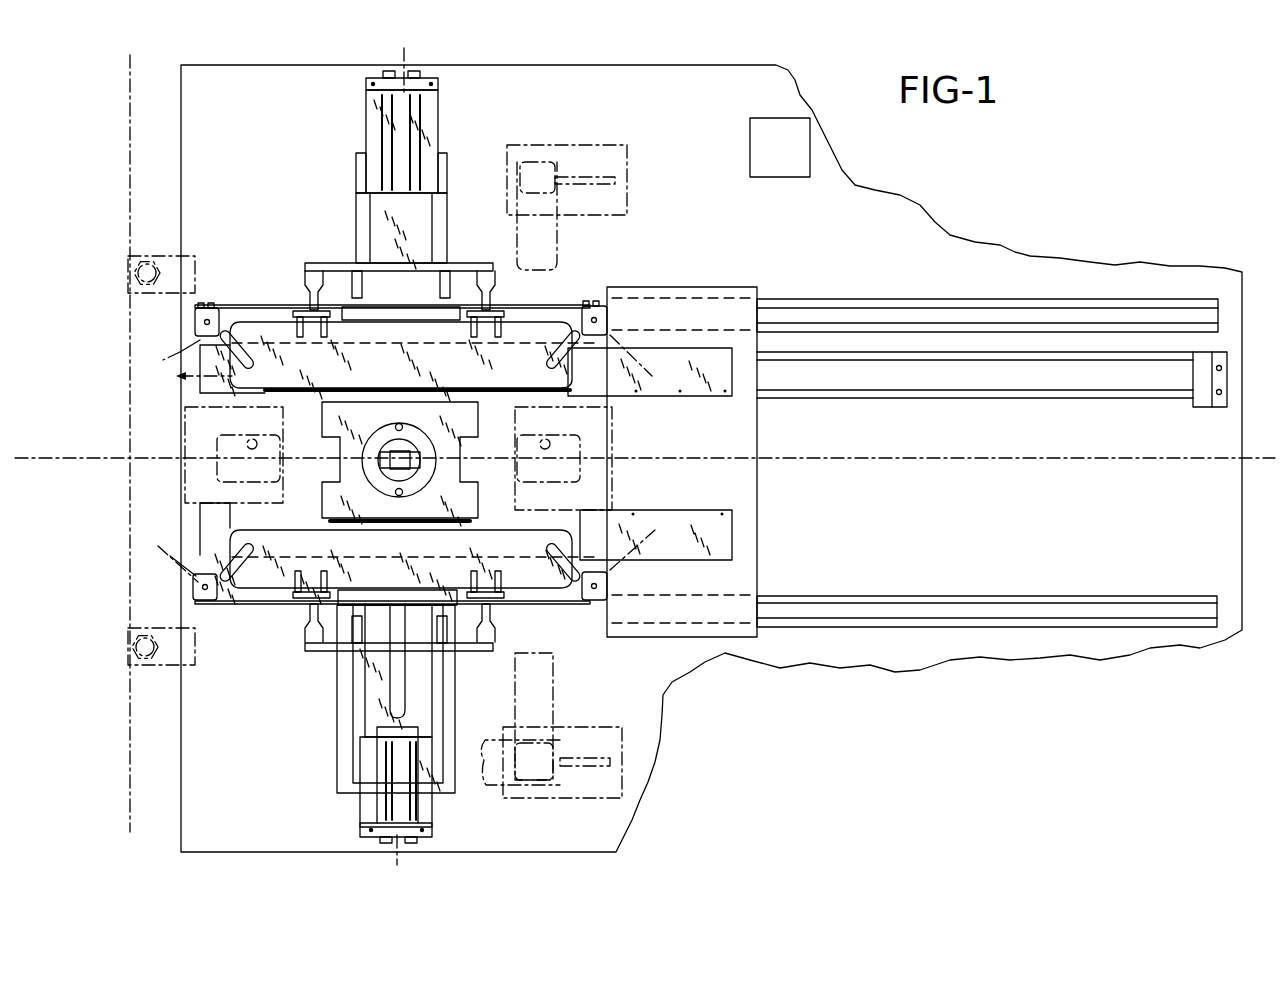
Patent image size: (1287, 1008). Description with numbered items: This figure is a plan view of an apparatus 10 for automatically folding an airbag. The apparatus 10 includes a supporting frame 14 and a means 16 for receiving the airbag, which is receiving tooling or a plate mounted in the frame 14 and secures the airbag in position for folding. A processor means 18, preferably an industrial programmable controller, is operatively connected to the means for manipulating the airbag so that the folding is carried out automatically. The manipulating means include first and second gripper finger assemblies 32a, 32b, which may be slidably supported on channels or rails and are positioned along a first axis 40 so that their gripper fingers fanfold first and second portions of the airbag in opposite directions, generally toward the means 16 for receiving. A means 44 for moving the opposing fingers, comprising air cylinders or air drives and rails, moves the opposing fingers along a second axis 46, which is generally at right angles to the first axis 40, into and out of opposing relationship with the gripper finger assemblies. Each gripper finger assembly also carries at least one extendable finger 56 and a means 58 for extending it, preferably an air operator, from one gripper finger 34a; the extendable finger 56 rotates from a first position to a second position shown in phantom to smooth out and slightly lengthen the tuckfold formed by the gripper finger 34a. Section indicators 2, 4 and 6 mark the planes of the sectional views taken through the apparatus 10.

The section line 2- 2 is at (160, 68).
The section line 4- 4 is at (332, 557).
The section line 6- 6 is at (152, 436).
The apparatus for folding an airbag 10 is at (768, 263).
The supporting frame 14 is at (553, 333).
The means for receiving 16 is at (462, 458).
The processor means 18 is at (674, 132).
The first gripper finger assembly 32a is at (518, 338).
The second gripper finger assembly 32b is at (508, 571).
The gripper finger 34a is at (283, 362).
The first axis 40 is at (404, 52).
The means for moving the opposing fingers 44 is at (797, 596).
The second axis 46 is at (48, 452).
The extendable finger 56 is at (160, 372).
The means for extending 58 is at (226, 304).